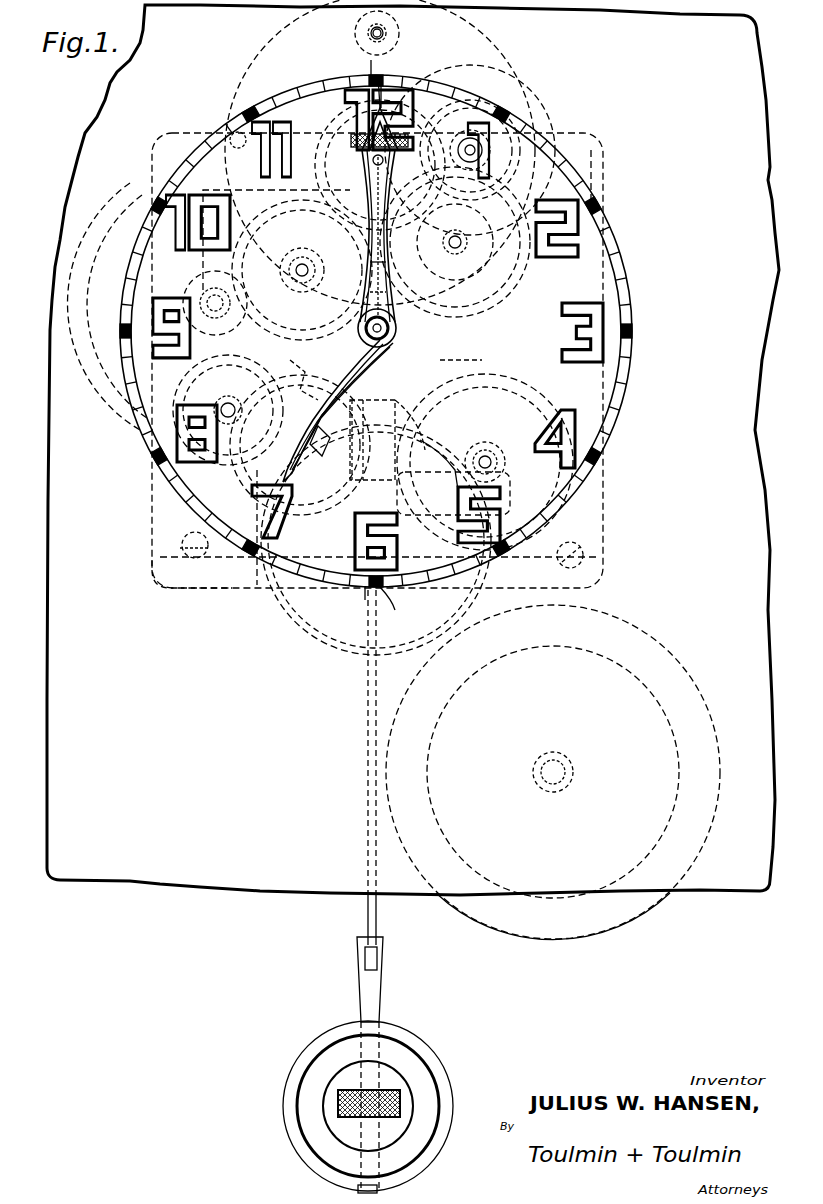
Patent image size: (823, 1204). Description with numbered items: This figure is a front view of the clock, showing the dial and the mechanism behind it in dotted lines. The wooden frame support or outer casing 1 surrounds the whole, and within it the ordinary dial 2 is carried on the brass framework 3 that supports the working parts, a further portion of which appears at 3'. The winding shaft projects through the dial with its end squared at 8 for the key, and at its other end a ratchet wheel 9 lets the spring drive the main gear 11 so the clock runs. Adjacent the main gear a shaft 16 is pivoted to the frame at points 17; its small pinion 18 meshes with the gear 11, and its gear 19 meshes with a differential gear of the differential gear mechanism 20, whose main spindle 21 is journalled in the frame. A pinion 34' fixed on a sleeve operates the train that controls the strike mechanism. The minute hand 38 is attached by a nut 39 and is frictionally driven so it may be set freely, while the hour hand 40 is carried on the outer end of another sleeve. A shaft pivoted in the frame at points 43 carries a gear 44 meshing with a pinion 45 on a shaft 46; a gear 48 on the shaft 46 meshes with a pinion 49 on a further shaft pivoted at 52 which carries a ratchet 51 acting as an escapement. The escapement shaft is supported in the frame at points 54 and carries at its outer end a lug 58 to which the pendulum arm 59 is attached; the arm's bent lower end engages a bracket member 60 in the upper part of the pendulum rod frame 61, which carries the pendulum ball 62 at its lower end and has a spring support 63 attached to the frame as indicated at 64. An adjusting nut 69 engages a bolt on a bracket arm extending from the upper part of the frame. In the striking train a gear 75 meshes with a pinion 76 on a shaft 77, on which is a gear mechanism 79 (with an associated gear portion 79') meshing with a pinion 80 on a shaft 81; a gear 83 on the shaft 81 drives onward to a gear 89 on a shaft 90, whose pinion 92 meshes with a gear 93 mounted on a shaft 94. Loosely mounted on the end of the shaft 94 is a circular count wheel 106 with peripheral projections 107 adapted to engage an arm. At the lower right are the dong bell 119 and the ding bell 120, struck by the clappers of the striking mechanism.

The wooden frame support 1 is at (98, 870).
The dial 2 is at (618, 276).
The brass framework 3 is at (399, 360).
The front plate corner 3' is at (192, 588).
The squared shaft end 8 is at (394, 592).
The ratchet wheel 9 is at (330, 592).
The gear 11 is at (340, 655).
The shaft 16 is at (485, 445).
The pivot points 17 is at (500, 447).
The pinion 18 is at (500, 470).
The gear 19 is at (546, 402).
The differential gear mechanism 20 is at (482, 360).
The main spindle 21 is at (389, 337).
The pinion 34' is at (485, 462).
The minute hand 38 is at (386, 85).
The nut 39 is at (388, 331).
The hour hand 40 is at (369, 400).
The pivot points 43 is at (470, 245).
The gear 44 is at (530, 284).
The pinion 45 is at (472, 135).
The shaft 46 is at (488, 152).
The gear 48 is at (536, 92).
The pinion 49 is at (352, 160).
The ratchet 51 is at (312, 82).
The pivot 52 is at (398, 162).
The support points 54 is at (392, 30).
The lug 58 is at (356, 36).
The pendulum arm 59 is at (370, 64).
The bracket member 60 is at (395, 398).
The pendulum rod frame 61 is at (468, 306).
The pendulum ball 62 is at (322, 1038).
The spring support 63 is at (386, 266).
The attachment 64 is at (386, 293).
The adjusting nut 69 is at (398, 135).
The gear 75 is at (300, 372).
The pinion 76 is at (195, 520).
The shaft 77 is at (210, 536).
The gear mechanism 79 is at (295, 445).
The cam wheel rim 79' is at (300, 445).
The pinion 80 is at (208, 408).
The shaft 81 is at (240, 402).
The gear 83 is at (248, 368).
The gear 89 is at (276, 216).
The shaft 90 is at (300, 248).
The pinion 92 is at (292, 256).
The gear 93 is at (207, 295).
The shaft 94 is at (210, 300).
The count wheel 106 is at (132, 200).
The projections 107 is at (112, 214).
The dong bell 119 is at (585, 942).
The ding bell 120 is at (620, 893).